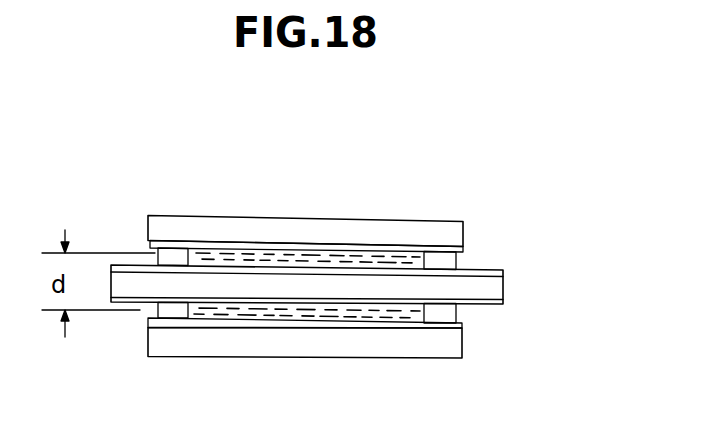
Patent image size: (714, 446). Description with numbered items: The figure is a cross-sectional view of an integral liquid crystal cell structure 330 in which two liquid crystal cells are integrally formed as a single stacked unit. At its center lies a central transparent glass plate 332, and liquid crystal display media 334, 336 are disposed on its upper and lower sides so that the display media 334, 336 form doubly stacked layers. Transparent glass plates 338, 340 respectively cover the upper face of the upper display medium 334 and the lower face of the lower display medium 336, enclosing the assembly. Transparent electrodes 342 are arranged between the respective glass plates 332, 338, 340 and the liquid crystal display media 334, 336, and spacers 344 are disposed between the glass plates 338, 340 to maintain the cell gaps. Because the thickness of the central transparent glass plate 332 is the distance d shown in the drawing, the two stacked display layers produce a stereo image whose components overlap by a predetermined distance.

The integral liquid crystal cell structure 330 is at (308, 214).
The central transparent glass plate 332 is at (503, 292).
The display medium 334 is at (386, 252).
The display medium 336 is at (307, 318).
The transparent glass plate 338 is at (433, 221).
The transparent glass plate 340 is at (430, 358).
The transparent electrodes 342 is at (463, 247).
The left spacers 344 is at (168, 308).